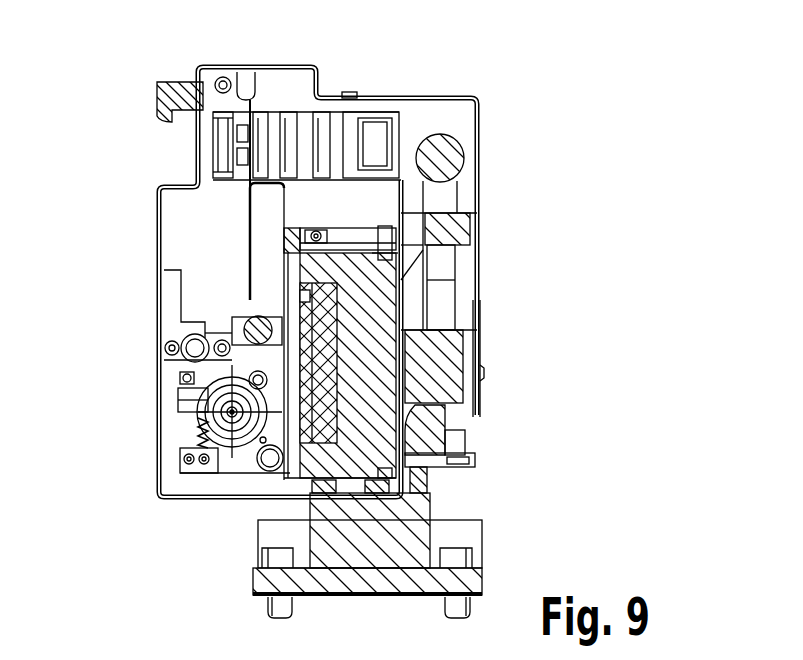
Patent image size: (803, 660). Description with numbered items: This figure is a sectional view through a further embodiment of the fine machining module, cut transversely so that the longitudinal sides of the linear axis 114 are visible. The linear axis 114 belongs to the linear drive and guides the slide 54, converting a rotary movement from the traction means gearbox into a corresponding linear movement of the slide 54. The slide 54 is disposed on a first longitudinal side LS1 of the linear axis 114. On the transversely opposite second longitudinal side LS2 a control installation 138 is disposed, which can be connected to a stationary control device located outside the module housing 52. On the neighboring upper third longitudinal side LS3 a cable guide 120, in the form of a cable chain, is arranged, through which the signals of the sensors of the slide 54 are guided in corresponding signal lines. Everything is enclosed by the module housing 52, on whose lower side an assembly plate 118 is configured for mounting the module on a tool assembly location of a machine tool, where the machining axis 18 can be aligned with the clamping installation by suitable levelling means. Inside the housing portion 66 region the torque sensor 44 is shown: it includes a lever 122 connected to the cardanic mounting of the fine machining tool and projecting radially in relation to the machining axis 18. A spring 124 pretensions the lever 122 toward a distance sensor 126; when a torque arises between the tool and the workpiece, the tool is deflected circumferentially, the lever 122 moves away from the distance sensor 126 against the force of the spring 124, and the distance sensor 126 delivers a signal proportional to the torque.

The cable guide 120 is at (345, 128).
The module housing 52 is at (428, 96).
The third longitudinal side LS3 is at (349, 243).
The second longitudinal side LS2 is at (414, 268).
The linear axis 114 is at (378, 291).
The control installation 138 is at (485, 321).
The housing section 66 is at (205, 226).
The slide 54 is at (128, 346).
The distance sensor 126 is at (185, 398).
The torque sensor 44 is at (128, 409).
The lever 122 is at (198, 418).
The spring 124 is at (200, 447).
The machining axis 18 is at (252, 440).
The assembly plate 118 is at (520, 536).
The first longitudinal side LS1 is at (300, 294).